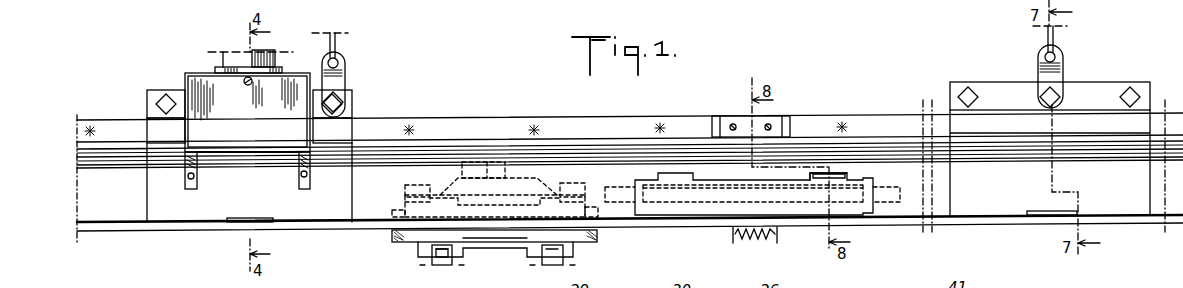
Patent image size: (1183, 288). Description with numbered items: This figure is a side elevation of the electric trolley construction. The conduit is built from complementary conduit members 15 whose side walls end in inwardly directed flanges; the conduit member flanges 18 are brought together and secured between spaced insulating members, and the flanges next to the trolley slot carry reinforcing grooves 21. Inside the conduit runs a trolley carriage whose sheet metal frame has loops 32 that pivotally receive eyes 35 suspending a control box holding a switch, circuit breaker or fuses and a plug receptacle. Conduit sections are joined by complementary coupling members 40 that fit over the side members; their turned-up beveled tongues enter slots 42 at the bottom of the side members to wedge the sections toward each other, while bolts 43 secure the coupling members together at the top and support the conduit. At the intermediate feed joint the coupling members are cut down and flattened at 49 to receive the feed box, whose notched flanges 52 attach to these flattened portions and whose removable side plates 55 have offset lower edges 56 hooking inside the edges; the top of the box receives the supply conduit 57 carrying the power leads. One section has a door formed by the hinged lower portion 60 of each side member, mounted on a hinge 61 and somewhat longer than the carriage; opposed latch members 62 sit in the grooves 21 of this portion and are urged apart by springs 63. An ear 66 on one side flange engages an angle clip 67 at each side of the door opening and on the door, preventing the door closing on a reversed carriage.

The conduit member 15 is at (423, 150).
The conduit member flange 18 is at (485, 133).
The reinforcing groove 21 is at (328, 228).
The loop 32 is at (420, 250).
The eye 35 is at (442, 257).
The coupling member 40 is at (178, 214).
The slot 42 is at (148, 222).
The bolt 43 is at (340, 100).
The flattened portion 49 is at (167, 164).
The flange 52 is at (188, 164).
The side plate 55 is at (248, 142).
The offset lower edge 56 is at (265, 145).
The supply conduit 57 is at (222, 60).
The hinged lower portion 60 is at (682, 208).
The hinge 61 is at (830, 178).
The latch member 62 is at (732, 239).
The spring 63 is at (757, 236).
The ear 66 is at (412, 184).
The angle clip 67 is at (620, 181).